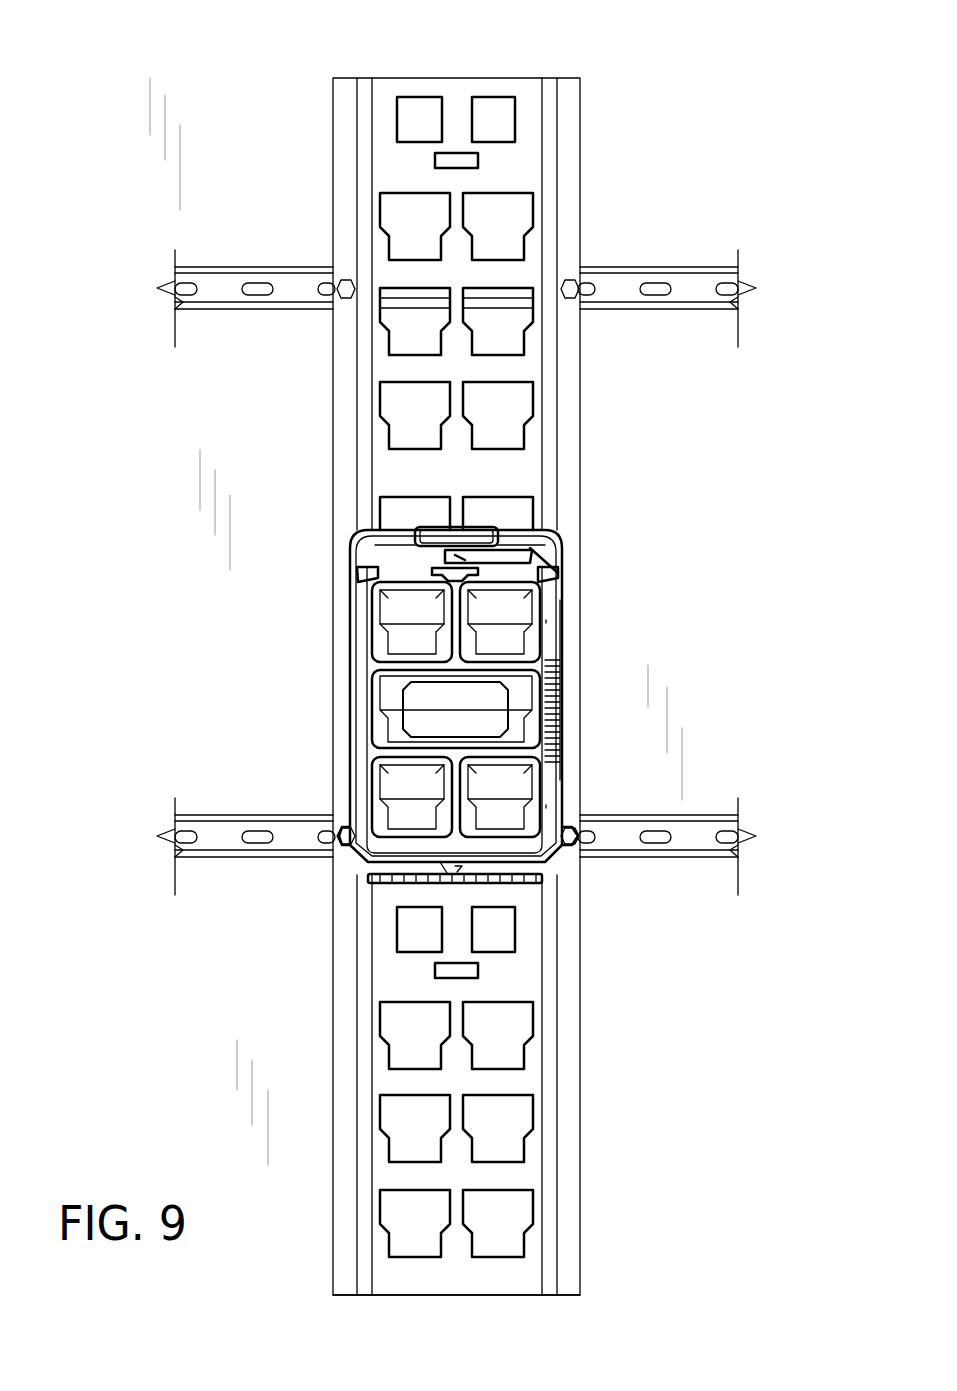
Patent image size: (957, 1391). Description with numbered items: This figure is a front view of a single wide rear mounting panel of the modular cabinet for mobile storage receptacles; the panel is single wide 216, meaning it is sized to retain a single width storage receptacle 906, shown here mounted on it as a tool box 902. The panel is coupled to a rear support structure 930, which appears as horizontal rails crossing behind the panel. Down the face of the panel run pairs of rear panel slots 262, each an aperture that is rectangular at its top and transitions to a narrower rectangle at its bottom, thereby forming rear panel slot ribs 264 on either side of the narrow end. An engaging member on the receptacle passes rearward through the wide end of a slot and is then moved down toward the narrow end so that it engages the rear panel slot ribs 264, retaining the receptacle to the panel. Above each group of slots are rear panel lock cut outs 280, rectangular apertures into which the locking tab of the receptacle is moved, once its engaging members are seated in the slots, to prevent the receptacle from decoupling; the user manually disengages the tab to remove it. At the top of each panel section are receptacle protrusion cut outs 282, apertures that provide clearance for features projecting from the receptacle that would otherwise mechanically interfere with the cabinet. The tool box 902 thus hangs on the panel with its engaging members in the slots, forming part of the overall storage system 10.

The tool storage system 10 is at (496, 397).
The single wide 216 is at (538, 1303).
The rear panel slots 262 is at (450, 1113).
The rear panel slot ribs 264 is at (474, 1228).
The rear panel lock cut outs 280 is at (478, 162).
The receptacle protrusion cut outs 282 is at (491, 97).
The tool box 902 is at (783, 528).
The single width storage receptacle 906 is at (556, 602).
The rear support structure 930 is at (247, 280).